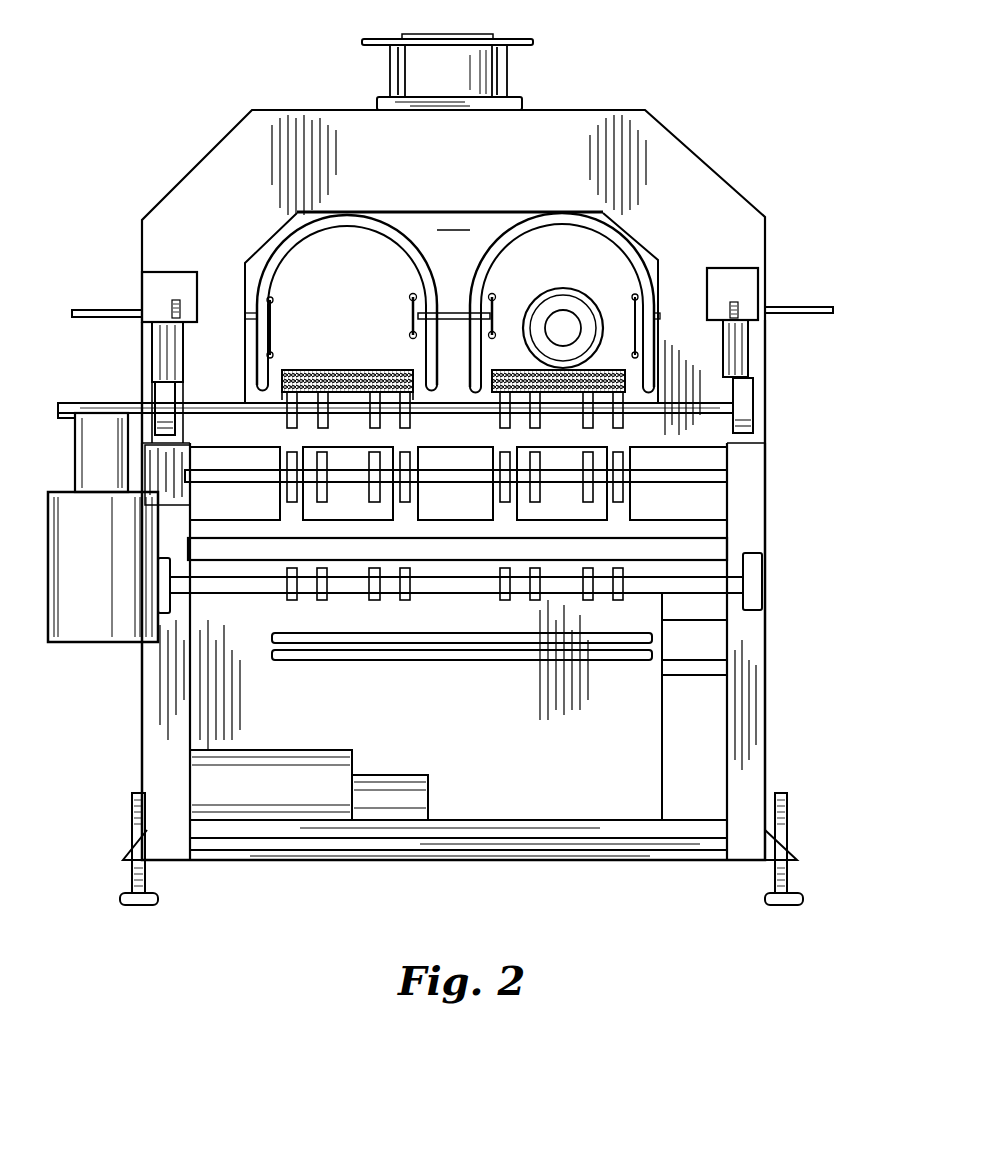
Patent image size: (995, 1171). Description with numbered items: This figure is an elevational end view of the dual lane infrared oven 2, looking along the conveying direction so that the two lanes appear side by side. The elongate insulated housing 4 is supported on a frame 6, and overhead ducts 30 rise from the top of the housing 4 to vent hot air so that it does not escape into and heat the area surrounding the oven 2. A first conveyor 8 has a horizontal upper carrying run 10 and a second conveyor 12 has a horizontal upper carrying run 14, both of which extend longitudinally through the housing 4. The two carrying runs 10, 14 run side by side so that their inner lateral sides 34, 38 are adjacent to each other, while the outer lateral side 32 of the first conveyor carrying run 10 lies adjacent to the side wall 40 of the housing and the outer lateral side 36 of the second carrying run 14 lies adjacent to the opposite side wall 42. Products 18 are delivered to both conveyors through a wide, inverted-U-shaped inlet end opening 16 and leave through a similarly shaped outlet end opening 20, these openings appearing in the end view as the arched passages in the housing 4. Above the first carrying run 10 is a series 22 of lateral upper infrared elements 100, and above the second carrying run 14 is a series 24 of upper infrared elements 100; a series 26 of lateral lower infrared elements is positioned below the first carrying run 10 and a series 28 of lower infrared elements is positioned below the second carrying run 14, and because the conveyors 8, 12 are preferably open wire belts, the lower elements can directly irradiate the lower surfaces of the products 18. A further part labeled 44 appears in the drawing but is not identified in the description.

The dual lane oven 2 is at (232, 105).
The insulated housing 4 is at (188, 168).
The frame 6 is at (768, 710).
The first conveyor 8 is at (714, 349).
The upper carrying run 10 is at (585, 380).
The second conveyor 12 is at (347, 340).
The upper carrying run 14 is at (345, 370).
The inlet end opening 16 is at (450, 181).
The products 18 is at (568, 300).
The outlet end opening 20 is at (455, 225).
The series of upper infrared elements 22 is at (620, 252).
The series of upper infrared elements 24 is at (304, 303).
The series of lower infrared elements 26 is at (650, 392).
The series of lower infrared elements 28 is at (263, 398).
The overhead ducts 30 is at (500, 27).
The outer lateral side 32 is at (660, 382).
The inner lateral side 34 is at (475, 367).
The outer lateral side 36 is at (282, 377).
The inner lateral side 38 is at (420, 367).
The side wall 40 is at (765, 370).
The side wall 42 is at (142, 360).
The left side mount 44 is at (134, 357).
The upper infrared elements 100 is at (287, 245).